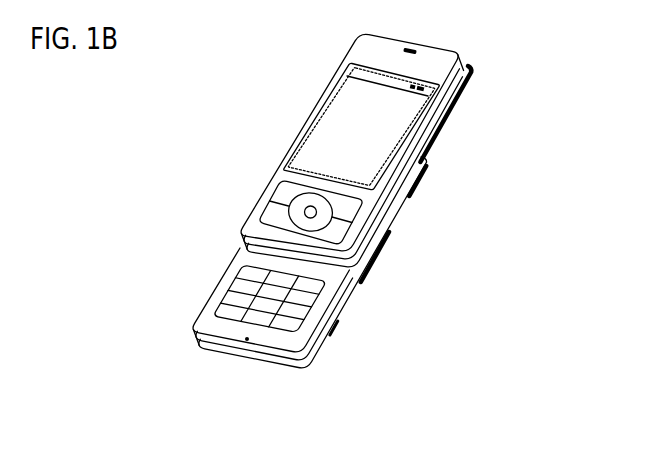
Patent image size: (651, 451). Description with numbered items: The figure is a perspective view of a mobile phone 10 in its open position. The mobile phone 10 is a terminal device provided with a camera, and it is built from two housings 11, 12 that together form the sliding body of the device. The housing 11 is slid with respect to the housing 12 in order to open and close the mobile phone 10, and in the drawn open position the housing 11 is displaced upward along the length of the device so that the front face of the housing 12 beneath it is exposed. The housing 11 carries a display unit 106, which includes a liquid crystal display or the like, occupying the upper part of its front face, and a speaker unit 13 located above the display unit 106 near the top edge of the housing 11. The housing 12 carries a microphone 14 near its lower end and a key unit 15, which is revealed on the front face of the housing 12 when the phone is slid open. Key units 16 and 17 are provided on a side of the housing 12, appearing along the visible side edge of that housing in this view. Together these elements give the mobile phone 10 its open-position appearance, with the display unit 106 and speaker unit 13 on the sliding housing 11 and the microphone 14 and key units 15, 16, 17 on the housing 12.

The mobile phone 10 is at (523, 79).
The housing 11 is at (447, 58).
The housing 12 is at (283, 350).
The speaker unit 13 is at (411, 50).
The microphone 14 is at (246, 341).
The key unit 15 is at (228, 306).
The key unit 16 is at (357, 284).
The key unit 17 is at (332, 330).
The display unit 106 is at (415, 100).